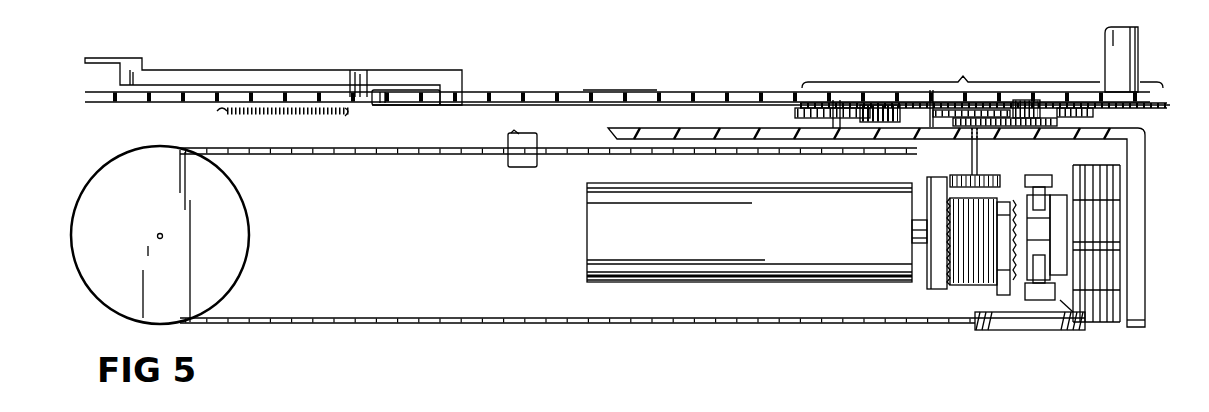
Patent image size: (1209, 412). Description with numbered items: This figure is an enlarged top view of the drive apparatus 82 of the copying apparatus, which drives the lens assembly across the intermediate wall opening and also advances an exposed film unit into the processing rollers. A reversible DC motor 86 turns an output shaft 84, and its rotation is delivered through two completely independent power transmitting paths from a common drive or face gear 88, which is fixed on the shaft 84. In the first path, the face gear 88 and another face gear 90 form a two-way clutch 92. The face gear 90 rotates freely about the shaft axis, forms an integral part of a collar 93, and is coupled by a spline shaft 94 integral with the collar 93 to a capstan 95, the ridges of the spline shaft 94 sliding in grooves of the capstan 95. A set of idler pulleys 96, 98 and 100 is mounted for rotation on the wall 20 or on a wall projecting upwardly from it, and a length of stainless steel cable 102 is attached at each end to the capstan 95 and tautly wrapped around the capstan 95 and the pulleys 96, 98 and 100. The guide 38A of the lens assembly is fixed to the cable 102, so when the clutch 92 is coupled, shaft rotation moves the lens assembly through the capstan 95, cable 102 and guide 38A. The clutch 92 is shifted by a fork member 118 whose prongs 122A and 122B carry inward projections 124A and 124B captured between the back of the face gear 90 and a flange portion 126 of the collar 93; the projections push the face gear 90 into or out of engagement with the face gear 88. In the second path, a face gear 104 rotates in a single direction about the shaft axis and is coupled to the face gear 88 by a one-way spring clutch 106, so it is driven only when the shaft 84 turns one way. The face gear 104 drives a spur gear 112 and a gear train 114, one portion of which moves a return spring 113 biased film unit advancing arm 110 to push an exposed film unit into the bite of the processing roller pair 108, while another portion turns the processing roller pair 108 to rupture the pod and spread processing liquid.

The wall 20 is at (314, 302).
The guide 38A is at (516, 158).
The drive apparatus 82 is at (438, 352).
The output shaft 84 is at (921, 255).
The reversible DC motor 86 is at (653, 262).
The face gear 88 is at (1003, 270).
The face gear 90 is at (1026, 278).
The two-way clutch 92 is at (1000, 284).
The collar 93 is at (1073, 248).
The spline shaft 94 is at (1071, 228).
The capstan 95 is at (1104, 318).
The idler pulley 96 is at (249, 229).
The idler pulley 98 is at (1130, 133).
The idler pulley 100 is at (1003, 329).
The stainless steel cable 102 is at (692, 318).
The face gear 104 is at (931, 195).
The one-way clutch 106 is at (958, 303).
The processing roller pair 108 is at (1088, 55).
The film unit advancing arm 110 is at (340, 73).
The spur gear 112 is at (962, 176).
The return spring 113 is at (290, 116).
The gear train 114 is at (981, 90).
The fork member 118 is at (1073, 325).
The prong 122A is at (1047, 300).
The prong 122B is at (1055, 180).
The projection 124A is at (1106, 289).
The projection 124B is at (1062, 197).
The flange portion 126 is at (1076, 217).